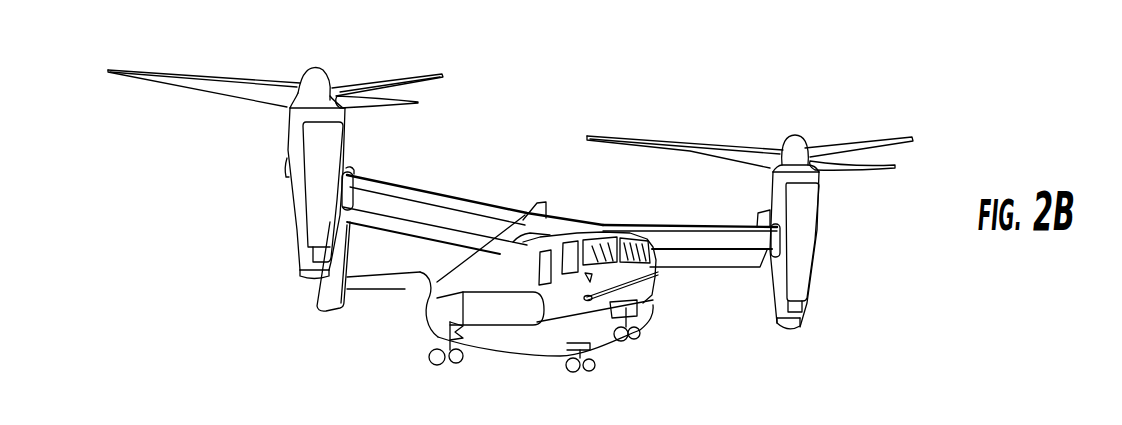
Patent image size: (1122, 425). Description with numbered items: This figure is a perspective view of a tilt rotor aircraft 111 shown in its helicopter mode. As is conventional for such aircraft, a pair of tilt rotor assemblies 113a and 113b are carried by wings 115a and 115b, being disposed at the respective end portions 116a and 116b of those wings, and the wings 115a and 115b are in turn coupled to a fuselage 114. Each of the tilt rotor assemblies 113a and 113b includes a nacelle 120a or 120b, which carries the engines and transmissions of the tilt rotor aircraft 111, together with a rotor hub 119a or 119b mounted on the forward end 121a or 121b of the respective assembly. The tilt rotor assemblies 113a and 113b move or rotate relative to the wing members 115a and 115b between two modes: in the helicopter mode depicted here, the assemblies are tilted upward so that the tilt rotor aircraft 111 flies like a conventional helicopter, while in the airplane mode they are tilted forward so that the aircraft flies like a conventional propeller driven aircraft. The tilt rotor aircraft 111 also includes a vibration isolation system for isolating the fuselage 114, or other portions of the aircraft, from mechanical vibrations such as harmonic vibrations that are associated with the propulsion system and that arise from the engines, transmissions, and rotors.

The tilt rotor aircraft 111 is at (490, 320).
The tilt rotor assembly 113a is at (753, 225).
The tilt rotor assembly 113b is at (275, 165).
The fuselage 114 is at (533, 352).
The wing 115a is at (683, 227).
The wing 115b is at (430, 190).
The end portion of wing 116a is at (760, 283).
The end portion of wing 116b is at (360, 168).
The rotor hub 119a is at (813, 147).
The rotor hub 119b is at (305, 78).
The nacelle 120a is at (806, 310).
The nacelle 120b is at (295, 268).
The forward end of tilt rotor assembly 121a is at (820, 183).
The forward end of tilt rotor assembly 121b is at (290, 122).